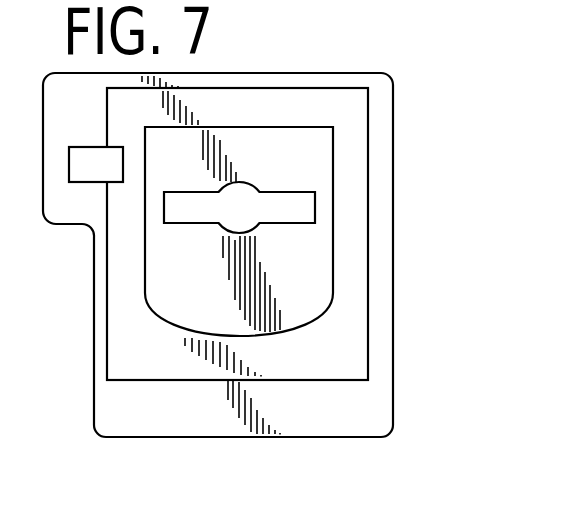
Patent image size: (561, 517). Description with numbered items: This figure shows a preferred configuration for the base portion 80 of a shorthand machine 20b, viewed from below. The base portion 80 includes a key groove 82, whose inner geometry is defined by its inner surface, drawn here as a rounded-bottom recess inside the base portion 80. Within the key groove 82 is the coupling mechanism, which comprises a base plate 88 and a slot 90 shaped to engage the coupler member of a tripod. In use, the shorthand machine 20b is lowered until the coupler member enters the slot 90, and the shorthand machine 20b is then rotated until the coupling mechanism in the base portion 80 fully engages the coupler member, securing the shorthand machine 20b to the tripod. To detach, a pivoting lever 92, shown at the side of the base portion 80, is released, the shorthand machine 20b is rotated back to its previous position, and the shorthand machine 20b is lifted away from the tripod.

The shorthand machine 20b is at (398, 320).
The base portion 80 is at (345, 110).
The key groove 82 is at (335, 247).
The base plate 88 is at (180, 280).
The slot 90 is at (281, 207).
The pivoting lever 92 is at (91, 163).